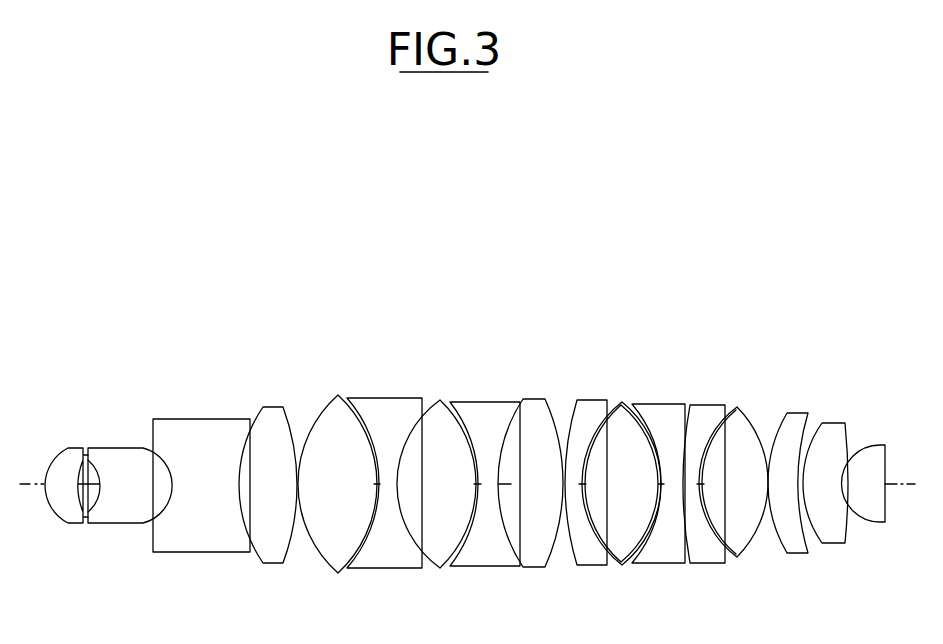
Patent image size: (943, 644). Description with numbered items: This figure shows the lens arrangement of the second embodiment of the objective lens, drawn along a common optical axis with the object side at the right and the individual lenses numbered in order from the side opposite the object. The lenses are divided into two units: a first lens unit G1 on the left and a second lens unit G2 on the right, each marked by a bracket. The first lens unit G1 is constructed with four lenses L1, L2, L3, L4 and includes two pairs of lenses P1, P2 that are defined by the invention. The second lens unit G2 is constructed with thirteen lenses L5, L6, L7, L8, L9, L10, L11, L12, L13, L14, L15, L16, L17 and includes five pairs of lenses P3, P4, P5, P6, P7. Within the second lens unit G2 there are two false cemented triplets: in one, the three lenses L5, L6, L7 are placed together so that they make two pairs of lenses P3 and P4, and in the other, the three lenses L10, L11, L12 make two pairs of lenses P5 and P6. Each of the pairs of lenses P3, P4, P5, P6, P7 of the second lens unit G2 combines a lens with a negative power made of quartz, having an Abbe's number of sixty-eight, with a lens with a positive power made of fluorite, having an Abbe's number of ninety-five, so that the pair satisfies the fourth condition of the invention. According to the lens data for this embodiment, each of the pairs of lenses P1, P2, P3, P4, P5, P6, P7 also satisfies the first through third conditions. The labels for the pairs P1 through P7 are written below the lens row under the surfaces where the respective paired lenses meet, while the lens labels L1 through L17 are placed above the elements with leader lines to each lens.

The first lens unit G1 is at (293, 342).
The second lens unit G2 is at (900, 338).
The lens L1 is at (62, 452).
The lens L2 is at (112, 450).
The lens L3 is at (207, 432).
The lens L4 is at (270, 420).
The lens L5 is at (332, 420).
The lens L6 is at (385, 407).
The lens L7 is at (435, 413).
The lens L8 is at (483, 410).
The lens L9 is at (540, 413).
The lens L10 is at (588, 407).
The lens L11 is at (617, 413).
The lens L12 is at (665, 413).
The lens L13 is at (707, 410).
The lens L14 is at (755, 413).
The lens L15 is at (792, 413).
The lens L16 is at (830, 423).
The lens L17 is at (858, 445).
The pair of lenses P1 is at (151, 594).
The pair of lenses P2 is at (248, 594).
The pair of lenses P3 is at (348, 594).
The pair of lenses P4 is at (414, 594).
The pair of lenses P5 is at (601, 594).
The pair of lenses P6 is at (647, 594).
The pair of lenses P7 is at (722, 594).